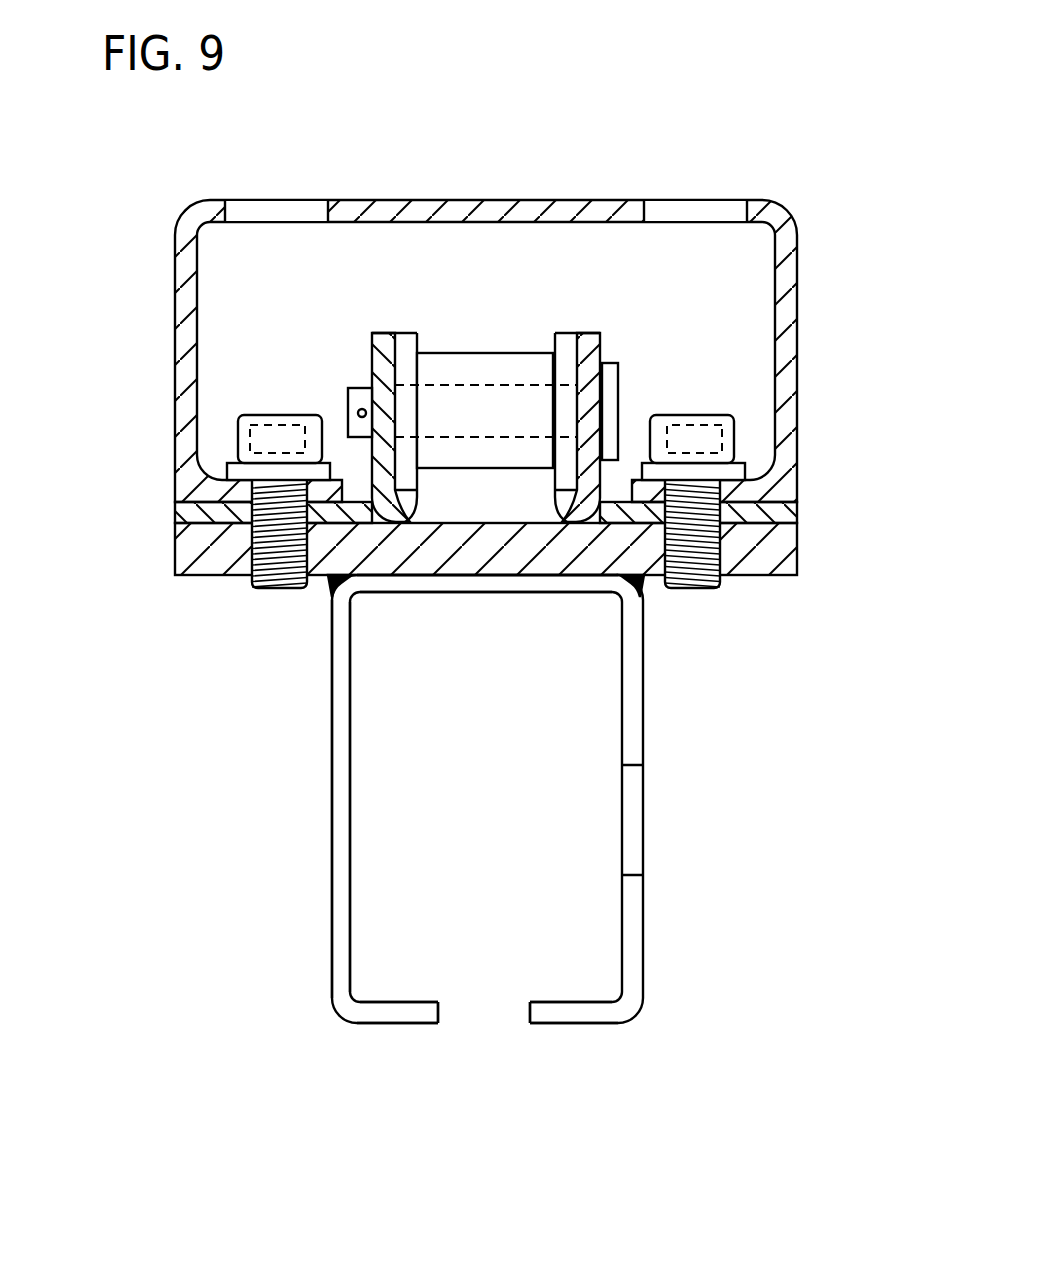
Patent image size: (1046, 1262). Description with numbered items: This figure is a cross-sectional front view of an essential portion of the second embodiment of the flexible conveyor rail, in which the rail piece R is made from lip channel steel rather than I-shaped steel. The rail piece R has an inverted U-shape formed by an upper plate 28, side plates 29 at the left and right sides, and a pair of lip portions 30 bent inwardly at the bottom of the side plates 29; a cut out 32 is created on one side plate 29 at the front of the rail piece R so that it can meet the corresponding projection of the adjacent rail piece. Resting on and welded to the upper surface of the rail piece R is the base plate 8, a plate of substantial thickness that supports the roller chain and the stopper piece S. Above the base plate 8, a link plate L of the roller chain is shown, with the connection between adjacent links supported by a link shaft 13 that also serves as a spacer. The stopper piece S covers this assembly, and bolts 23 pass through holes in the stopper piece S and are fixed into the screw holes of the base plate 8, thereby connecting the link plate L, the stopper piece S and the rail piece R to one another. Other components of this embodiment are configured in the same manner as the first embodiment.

The stopper piece S is at (438, 200).
The link plate L is at (505, 345).
The link shaft 13 is at (350, 387).
The bolt 23 is at (245, 427).
The base plate 8 is at (340, 583).
The upper plate 28 is at (540, 585).
The side plate 29 is at (340, 710).
The rail piece R is at (643, 705).
The lip portion 30 is at (394, 1012).
The cut out 32 is at (628, 987).